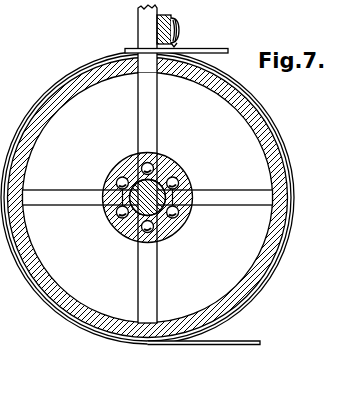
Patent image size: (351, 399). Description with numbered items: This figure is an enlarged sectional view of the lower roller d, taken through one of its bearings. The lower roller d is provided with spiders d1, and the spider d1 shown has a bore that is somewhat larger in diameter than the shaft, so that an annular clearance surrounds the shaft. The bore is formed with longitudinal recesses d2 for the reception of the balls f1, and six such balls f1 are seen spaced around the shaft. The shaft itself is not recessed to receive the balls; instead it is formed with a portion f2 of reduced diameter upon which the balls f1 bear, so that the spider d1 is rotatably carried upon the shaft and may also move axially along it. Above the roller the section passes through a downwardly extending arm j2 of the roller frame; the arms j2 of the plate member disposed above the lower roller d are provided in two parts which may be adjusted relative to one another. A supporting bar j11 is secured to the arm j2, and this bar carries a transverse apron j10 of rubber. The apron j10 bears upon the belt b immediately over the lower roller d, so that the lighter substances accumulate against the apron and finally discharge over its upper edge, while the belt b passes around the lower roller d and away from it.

The lower roller d is at (133, 50).
The belt b is at (222, 54).
The spider d1 is at (150, 99).
The longitudinal recess d2 is at (169, 178).
The ball f1 is at (179, 183).
The portion of reduced diameter f2 is at (131, 163).
The downwardly extending arm j2 is at (138, 19).
The supporting bar j11 is at (178, 18).
The transverse apron j10 is at (181, 40).